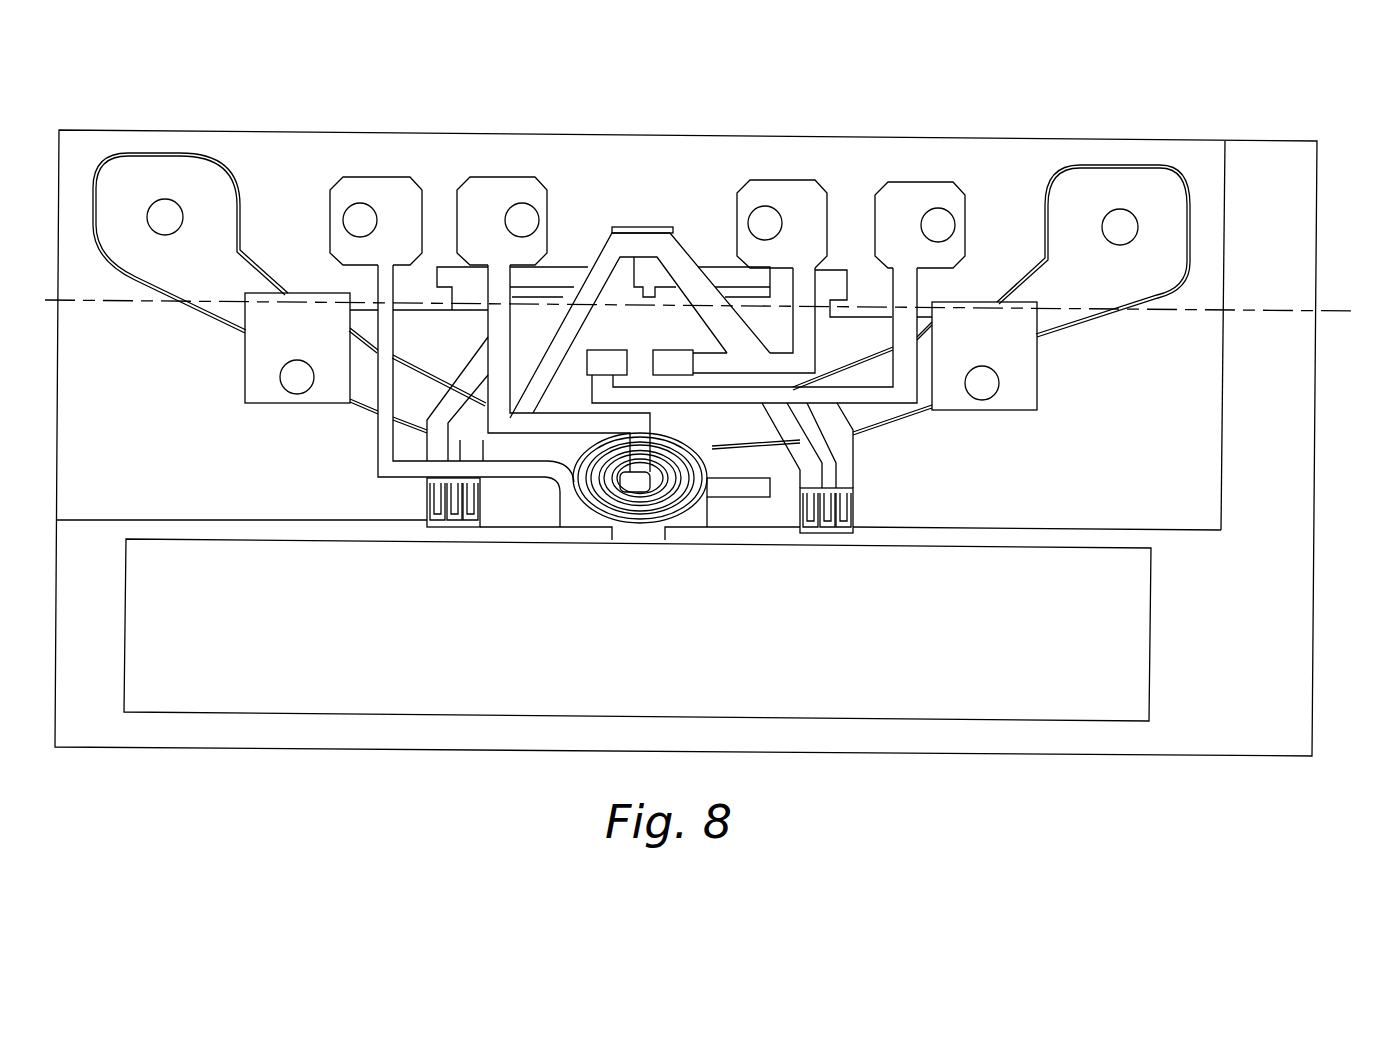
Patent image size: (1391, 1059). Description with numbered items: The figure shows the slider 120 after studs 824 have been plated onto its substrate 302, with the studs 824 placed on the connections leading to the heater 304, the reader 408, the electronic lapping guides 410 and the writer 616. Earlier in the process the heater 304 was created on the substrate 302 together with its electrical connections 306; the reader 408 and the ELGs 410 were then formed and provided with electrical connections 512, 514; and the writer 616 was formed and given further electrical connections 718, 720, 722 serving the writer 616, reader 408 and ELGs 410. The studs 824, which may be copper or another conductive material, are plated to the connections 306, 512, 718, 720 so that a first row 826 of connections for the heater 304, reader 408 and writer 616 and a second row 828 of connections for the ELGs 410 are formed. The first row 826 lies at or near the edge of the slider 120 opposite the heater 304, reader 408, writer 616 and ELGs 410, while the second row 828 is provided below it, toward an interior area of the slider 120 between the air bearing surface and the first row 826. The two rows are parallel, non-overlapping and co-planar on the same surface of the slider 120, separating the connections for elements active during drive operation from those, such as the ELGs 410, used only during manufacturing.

The slider 120 is at (222, 65).
The substrate 302 is at (663, 130).
The heater 304 is at (635, 487).
The electrical connections 306 is at (232, 325).
The reader 408 is at (718, 512).
The electronic lapping guides 410 is at (427, 503).
The electrical connections 512 is at (255, 371).
The electrical connections 514 is at (682, 360).
The writer 616 is at (693, 452).
The electrical connections 718 is at (375, 193).
The electrical connections 720 is at (780, 197).
The electrical connections 722 is at (603, 257).
The studs 824 is at (162, 215).
The first row of connections 826 is at (1290, 265).
The second row of connections 828 is at (1290, 370).